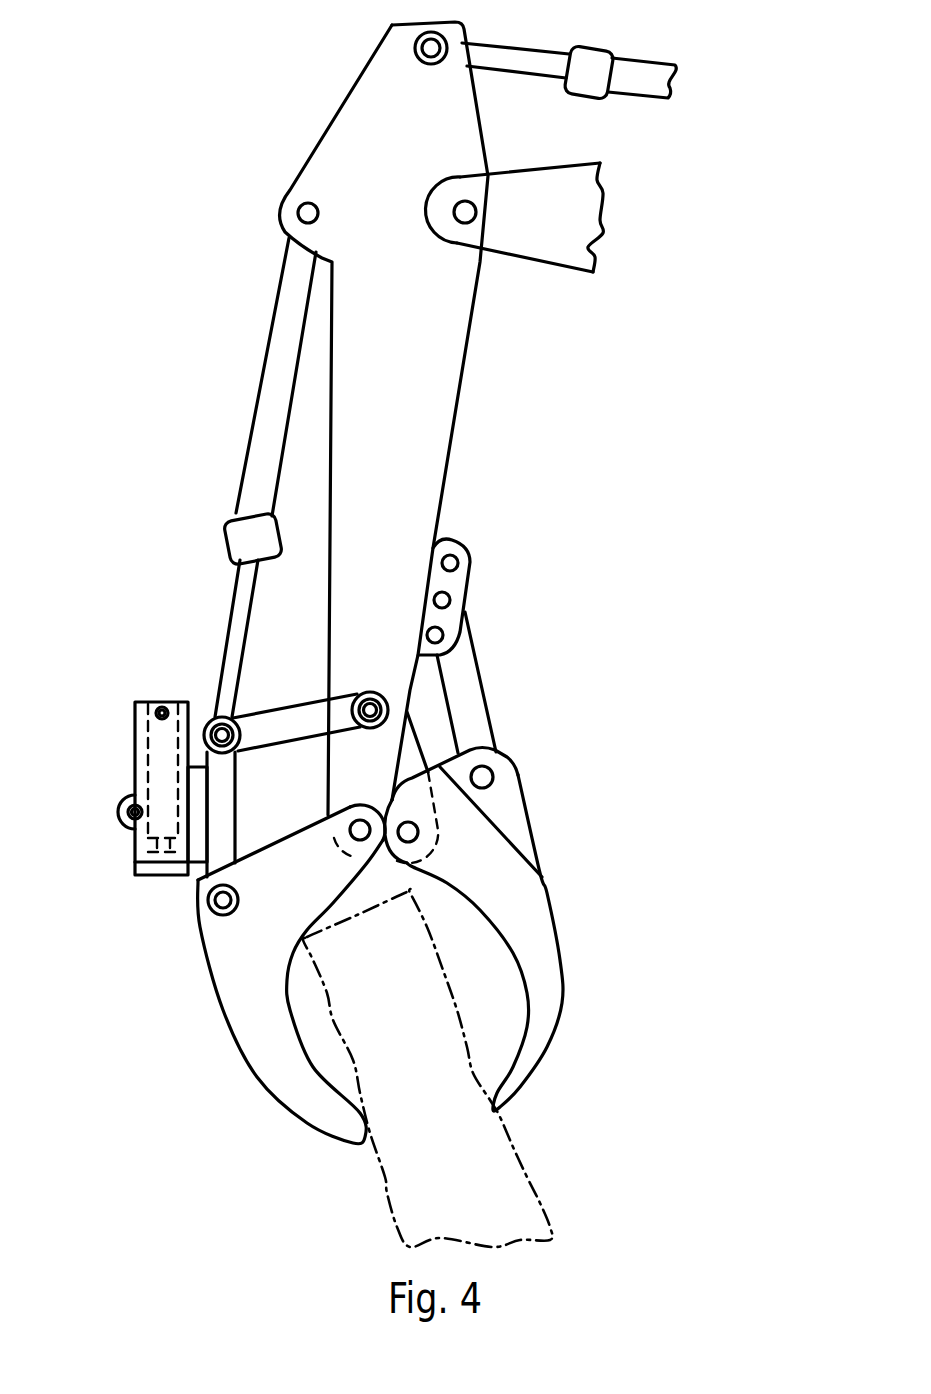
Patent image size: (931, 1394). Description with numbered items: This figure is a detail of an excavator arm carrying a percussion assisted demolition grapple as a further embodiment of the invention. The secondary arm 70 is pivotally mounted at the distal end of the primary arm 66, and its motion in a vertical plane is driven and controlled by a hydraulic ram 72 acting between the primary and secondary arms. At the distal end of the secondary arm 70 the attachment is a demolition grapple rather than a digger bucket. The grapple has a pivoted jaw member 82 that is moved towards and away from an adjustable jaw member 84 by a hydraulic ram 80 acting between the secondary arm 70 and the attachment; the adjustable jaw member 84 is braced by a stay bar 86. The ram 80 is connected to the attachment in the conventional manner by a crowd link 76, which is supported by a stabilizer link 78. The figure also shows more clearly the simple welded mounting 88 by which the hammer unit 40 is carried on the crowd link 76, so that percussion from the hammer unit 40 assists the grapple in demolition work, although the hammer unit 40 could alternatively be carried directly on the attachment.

The hammer unit 40 is at (135, 750).
The primary arm 66 is at (570, 215).
The secondary arm 70 is at (350, 130).
The hydraulic ram 72 is at (643, 73).
The crowd link 76 is at (218, 813).
The stabilizer link 78 is at (300, 723).
The hydraulic ram 80 is at (275, 385).
The pivoted jaw member 82 is at (260, 1020).
The adjustable jaw member 84 is at (545, 948).
The stay bar 86 is at (468, 687).
The welded mounting 88 is at (198, 842).